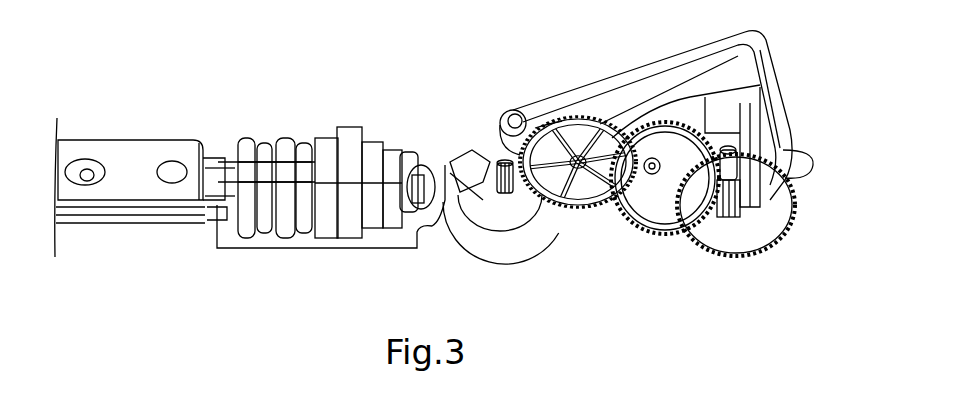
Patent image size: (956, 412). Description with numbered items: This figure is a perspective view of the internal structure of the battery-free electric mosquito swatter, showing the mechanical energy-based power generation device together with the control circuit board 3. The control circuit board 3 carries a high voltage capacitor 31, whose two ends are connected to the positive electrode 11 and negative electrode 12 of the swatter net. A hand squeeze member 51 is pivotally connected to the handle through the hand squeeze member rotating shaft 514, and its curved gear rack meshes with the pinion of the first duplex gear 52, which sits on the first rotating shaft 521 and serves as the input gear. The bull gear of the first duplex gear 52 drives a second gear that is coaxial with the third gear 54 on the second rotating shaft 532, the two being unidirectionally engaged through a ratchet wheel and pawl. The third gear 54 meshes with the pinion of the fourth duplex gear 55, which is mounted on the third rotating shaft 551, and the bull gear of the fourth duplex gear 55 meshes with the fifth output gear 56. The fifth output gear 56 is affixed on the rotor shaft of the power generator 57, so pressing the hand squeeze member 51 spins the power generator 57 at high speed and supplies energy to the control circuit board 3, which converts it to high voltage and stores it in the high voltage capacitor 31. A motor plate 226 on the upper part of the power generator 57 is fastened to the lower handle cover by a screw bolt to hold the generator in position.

The control circuit board 3 is at (312, 228).
The positive electrode 11 is at (224, 222).
The negative electrode 12 is at (223, 217).
The high voltage capacitor 31 is at (292, 160).
The hand squeeze member 51 is at (662, 80).
The first duplex gear 52 is at (728, 230).
The third gear 54 is at (641, 203).
The fourth duplex gear 55 is at (587, 205).
The fifth output gear 56 is at (472, 158).
The power generator 57 is at (503, 242).
The motor plate 226 is at (483, 162).
The hand squeeze member rotating shaft 514 is at (506, 112).
The first rotating shaft 521 is at (745, 197).
The second rotating shaft 532 is at (655, 200).
The third rotating shaft 551 is at (566, 102).